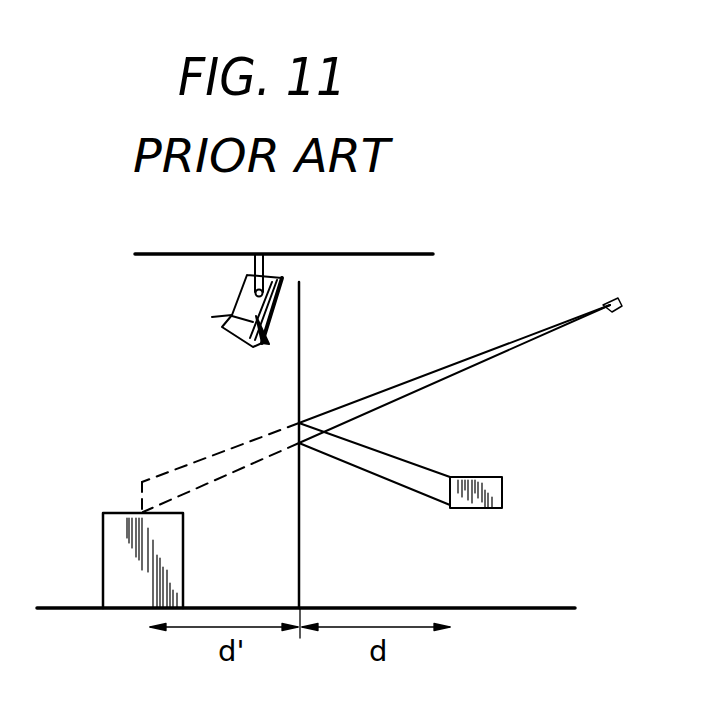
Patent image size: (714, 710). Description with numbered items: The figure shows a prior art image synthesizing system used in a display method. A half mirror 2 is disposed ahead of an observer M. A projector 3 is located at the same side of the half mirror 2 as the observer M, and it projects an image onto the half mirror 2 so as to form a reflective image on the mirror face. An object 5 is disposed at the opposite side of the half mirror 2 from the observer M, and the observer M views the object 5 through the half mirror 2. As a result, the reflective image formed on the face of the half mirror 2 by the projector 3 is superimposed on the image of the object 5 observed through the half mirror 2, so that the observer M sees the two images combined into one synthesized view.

The half mirror 2 is at (299, 372).
The projector 3 is at (472, 477).
The object 5 is at (115, 522).
The observer M is at (612, 312).